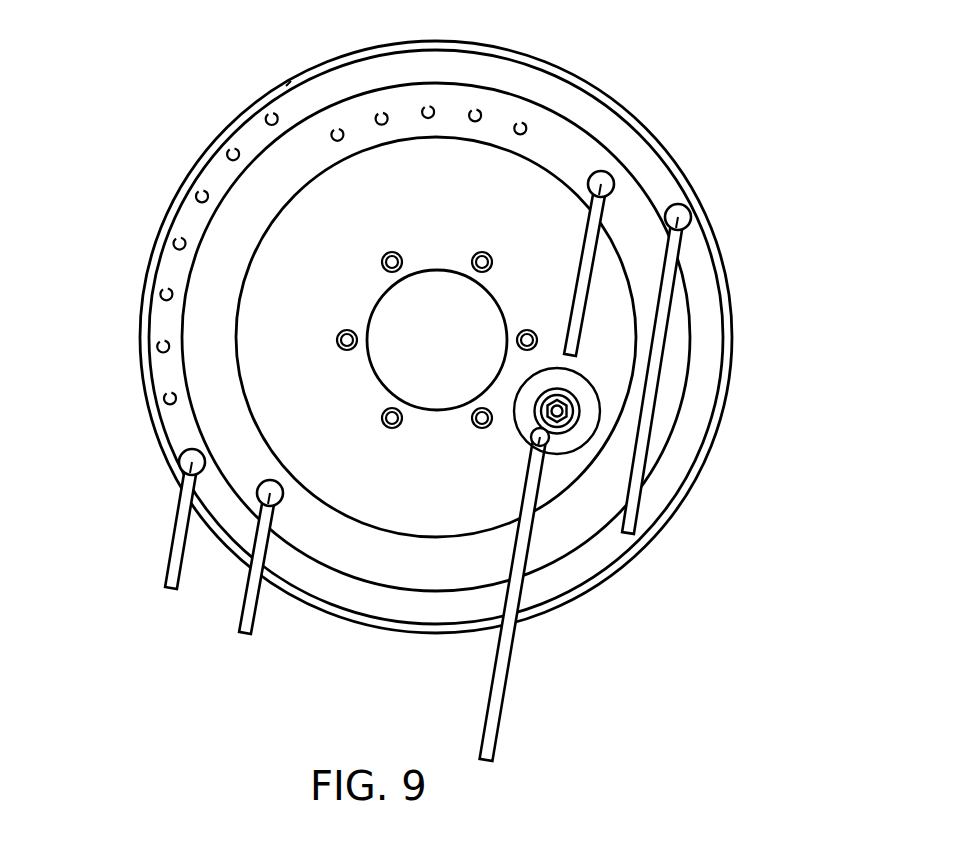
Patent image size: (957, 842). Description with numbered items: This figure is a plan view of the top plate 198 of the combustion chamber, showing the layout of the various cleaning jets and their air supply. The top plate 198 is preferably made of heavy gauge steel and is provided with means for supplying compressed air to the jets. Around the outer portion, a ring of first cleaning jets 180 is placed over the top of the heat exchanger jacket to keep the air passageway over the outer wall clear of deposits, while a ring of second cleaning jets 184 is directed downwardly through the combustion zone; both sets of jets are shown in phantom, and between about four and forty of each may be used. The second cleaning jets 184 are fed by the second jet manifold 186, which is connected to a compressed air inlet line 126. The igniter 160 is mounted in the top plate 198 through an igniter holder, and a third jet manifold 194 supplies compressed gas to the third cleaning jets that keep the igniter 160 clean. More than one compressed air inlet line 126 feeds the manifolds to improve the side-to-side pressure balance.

The top plate 198 is at (651, 116).
The second jet manifold 186 is at (243, 264).
The first cleaning jets 180 is at (225, 146).
The second cleaning jets 184 is at (392, 122).
The compressed air inlet line 126 is at (242, 600).
The igniter 160 is at (578, 406).
The third jet manifold 194 is at (527, 426).